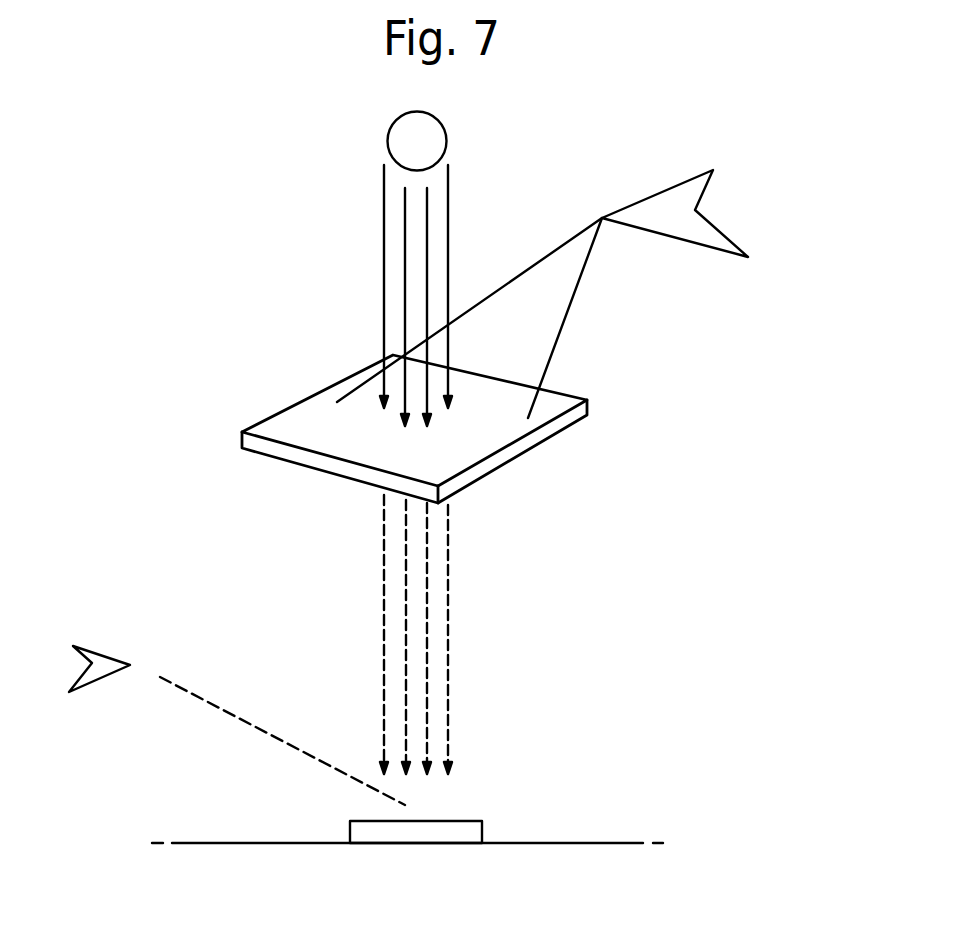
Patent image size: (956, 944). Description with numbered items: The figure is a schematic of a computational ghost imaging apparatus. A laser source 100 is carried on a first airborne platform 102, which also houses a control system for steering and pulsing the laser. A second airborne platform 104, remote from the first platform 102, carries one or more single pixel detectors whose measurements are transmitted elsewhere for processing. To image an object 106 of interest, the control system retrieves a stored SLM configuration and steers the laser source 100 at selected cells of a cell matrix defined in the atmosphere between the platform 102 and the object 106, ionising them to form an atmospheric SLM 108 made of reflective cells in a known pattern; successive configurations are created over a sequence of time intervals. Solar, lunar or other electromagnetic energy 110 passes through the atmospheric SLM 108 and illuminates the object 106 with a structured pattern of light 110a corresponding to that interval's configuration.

The laser source 100 is at (570, 308).
The first airborne platform 102 is at (698, 230).
The second airborne platform 104 is at (108, 680).
The object of interest 106 is at (470, 830).
The atmospheric SLM 108 is at (307, 410).
The electromagnetic energy 110 is at (448, 210).
The structured pattern of light 110a is at (450, 603).